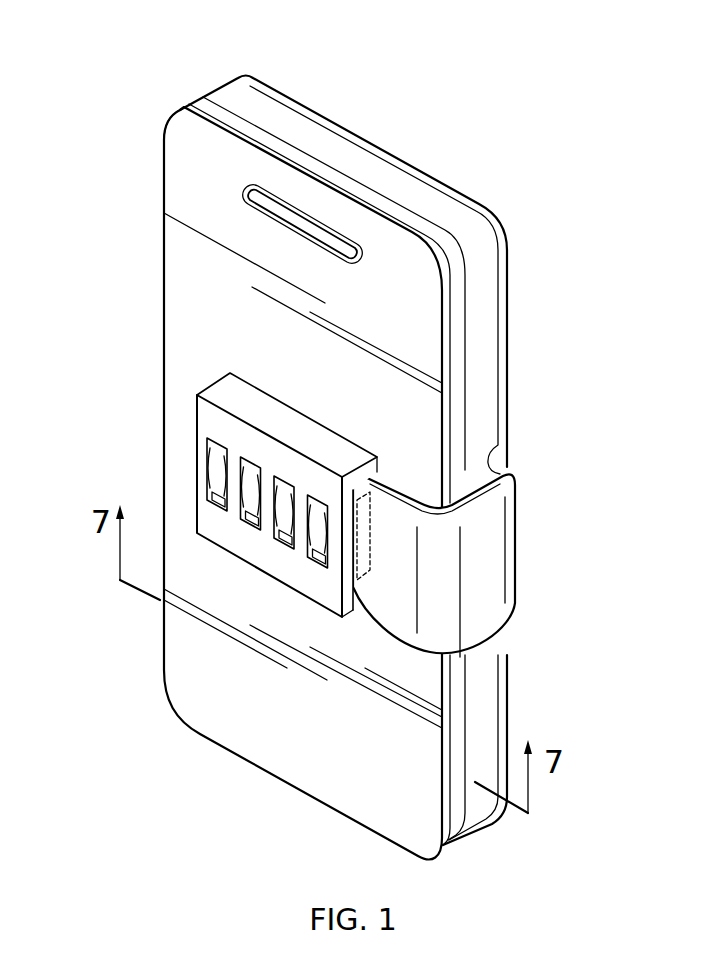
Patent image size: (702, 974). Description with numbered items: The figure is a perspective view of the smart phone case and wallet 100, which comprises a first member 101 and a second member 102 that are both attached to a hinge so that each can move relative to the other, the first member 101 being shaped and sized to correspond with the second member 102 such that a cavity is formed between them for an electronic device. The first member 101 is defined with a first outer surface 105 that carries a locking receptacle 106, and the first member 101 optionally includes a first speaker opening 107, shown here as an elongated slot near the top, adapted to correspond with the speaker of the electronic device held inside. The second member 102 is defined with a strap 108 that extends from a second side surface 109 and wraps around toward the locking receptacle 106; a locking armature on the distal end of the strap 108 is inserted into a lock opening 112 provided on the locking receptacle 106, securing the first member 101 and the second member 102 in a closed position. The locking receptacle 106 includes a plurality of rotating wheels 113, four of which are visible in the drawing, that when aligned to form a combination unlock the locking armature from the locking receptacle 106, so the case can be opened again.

The smart phone case and wallet 100 is at (570, 112).
The first member 101 is at (164, 250).
The second member 102 is at (215, 90).
The first outer surface 105 is at (197, 288).
The locking receptacle 106 is at (205, 420).
The first speaker opening 107 is at (303, 213).
The strap 108 is at (480, 560).
The second side surface 109 is at (478, 386).
The lock opening 112 is at (370, 557).
The rotating wheels 113 is at (208, 466).